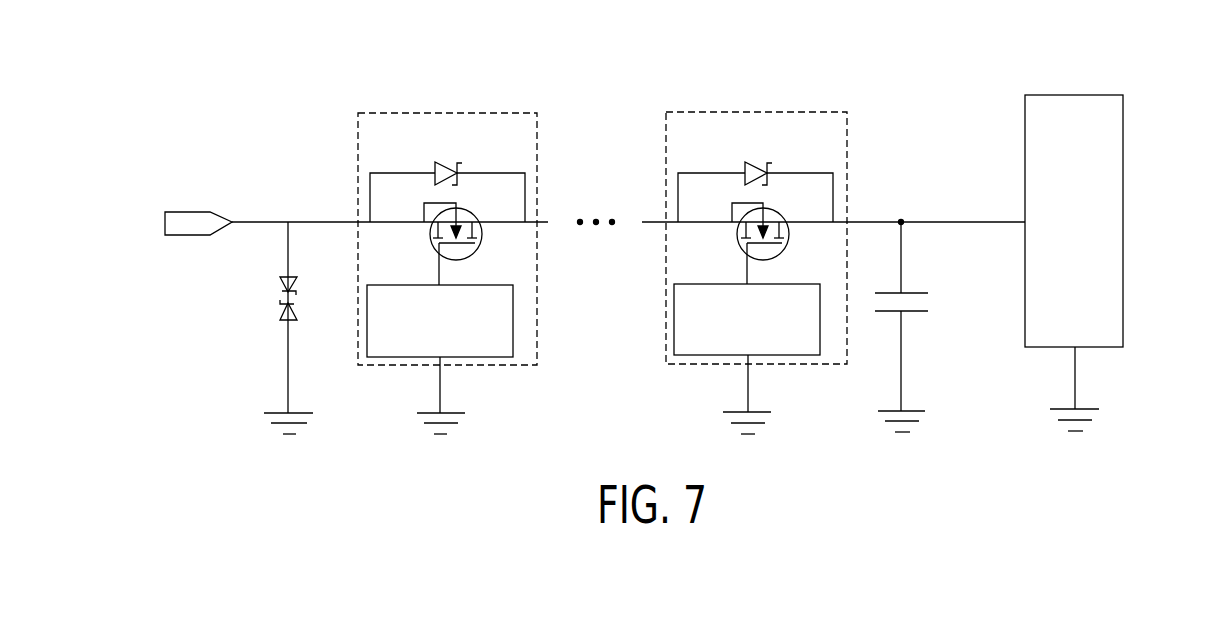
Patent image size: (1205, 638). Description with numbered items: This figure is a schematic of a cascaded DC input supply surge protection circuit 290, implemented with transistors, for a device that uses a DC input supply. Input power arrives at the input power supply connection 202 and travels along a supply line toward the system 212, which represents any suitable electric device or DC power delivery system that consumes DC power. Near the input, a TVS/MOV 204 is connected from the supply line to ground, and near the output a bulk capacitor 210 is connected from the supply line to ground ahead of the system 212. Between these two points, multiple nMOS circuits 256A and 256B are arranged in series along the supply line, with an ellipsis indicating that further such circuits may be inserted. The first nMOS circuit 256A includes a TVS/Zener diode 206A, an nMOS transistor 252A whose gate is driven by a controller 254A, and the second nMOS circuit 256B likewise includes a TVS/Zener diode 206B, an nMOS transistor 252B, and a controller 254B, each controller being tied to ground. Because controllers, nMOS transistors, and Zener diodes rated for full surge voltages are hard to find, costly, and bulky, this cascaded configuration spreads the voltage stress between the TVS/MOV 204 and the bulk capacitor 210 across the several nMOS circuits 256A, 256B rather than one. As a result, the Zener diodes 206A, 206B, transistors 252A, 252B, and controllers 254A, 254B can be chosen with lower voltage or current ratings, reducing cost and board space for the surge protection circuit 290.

The DC input supply surge protection circuit 290 is at (167, 89).
The input power supply connection 202 is at (188, 211).
The TVS/MOV 204 is at (297, 297).
The nMOS circuit 256A is at (452, 113).
The TVS/Zener diode 206A is at (452, 165).
The nMOS transistor 252A is at (483, 238).
The controller 254A is at (515, 320).
The nMOS circuit 256B is at (762, 112).
The TVS/Zener diode 206B is at (762, 165).
The nMOS transistor 252B is at (790, 238).
The controller 254B is at (673, 319).
The bulk capacitor 210 is at (912, 292).
The system 212 is at (1123, 218).